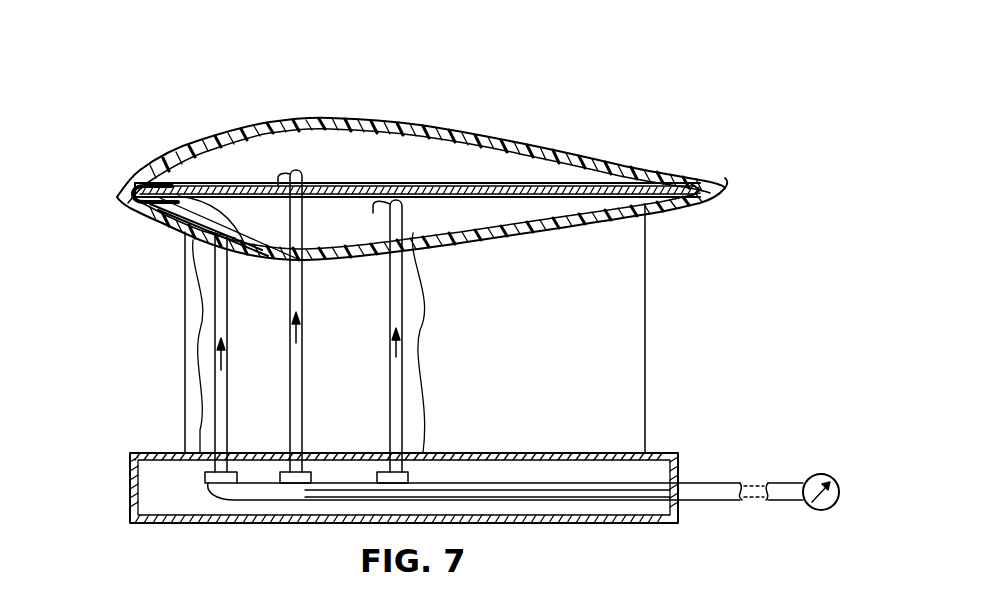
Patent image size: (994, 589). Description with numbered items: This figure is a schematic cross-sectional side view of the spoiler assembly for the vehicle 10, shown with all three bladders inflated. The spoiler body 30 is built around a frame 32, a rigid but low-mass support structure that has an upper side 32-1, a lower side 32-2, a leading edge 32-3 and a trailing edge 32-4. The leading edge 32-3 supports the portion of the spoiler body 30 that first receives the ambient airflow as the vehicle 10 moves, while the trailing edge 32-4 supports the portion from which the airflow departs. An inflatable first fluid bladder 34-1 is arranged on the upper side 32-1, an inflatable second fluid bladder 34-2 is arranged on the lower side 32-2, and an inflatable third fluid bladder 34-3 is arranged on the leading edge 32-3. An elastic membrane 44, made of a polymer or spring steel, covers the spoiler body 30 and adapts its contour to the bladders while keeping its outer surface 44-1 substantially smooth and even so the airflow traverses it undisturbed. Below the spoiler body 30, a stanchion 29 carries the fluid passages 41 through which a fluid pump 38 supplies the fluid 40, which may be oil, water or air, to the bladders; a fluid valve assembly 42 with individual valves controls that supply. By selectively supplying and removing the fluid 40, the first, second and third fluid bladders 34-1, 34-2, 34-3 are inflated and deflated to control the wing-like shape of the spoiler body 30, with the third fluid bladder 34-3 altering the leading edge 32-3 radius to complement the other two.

The vehicle 10 is at (143, 72).
The stanchion 29 is at (648, 348).
The spoiler body 30 is at (531, 250).
The frame 32 is at (195, 238).
The upper side 32-1 is at (337, 181).
The lower side 32-2 is at (347, 203).
The leading edge 32-3 is at (117, 193).
The trailing edge 32-4 is at (725, 190).
The first fluid bladder 34-1 is at (250, 158).
The second fluid bladder 34-2 is at (268, 215).
The third fluid bladder 34-3 is at (118, 210).
The fluid pump 38 is at (817, 475).
The fluid 40 is at (220, 353).
The fluid passage 41 is at (213, 437).
The fluid valve assembly 42 is at (231, 470).
The elastic membrane 44 is at (567, 223).
The outer surface 44-1 is at (513, 143).